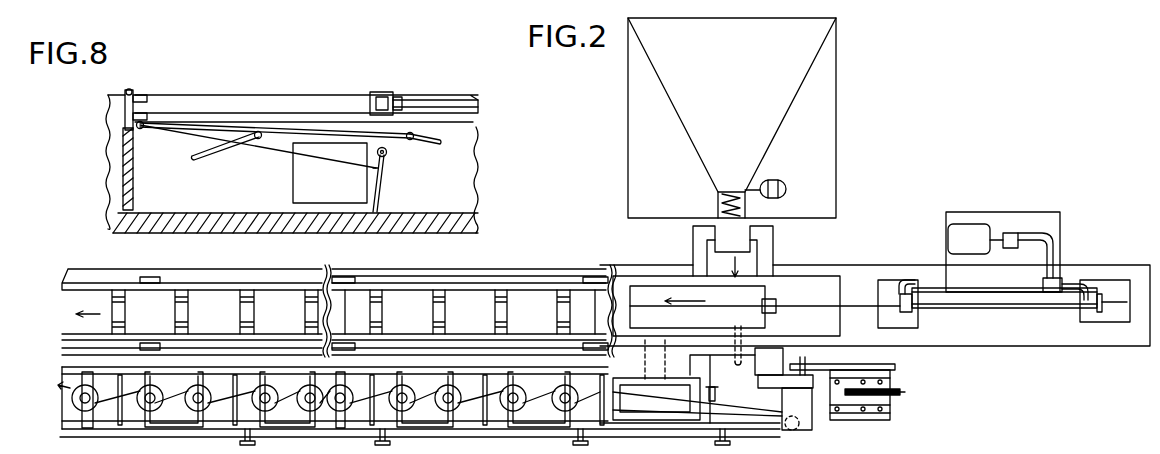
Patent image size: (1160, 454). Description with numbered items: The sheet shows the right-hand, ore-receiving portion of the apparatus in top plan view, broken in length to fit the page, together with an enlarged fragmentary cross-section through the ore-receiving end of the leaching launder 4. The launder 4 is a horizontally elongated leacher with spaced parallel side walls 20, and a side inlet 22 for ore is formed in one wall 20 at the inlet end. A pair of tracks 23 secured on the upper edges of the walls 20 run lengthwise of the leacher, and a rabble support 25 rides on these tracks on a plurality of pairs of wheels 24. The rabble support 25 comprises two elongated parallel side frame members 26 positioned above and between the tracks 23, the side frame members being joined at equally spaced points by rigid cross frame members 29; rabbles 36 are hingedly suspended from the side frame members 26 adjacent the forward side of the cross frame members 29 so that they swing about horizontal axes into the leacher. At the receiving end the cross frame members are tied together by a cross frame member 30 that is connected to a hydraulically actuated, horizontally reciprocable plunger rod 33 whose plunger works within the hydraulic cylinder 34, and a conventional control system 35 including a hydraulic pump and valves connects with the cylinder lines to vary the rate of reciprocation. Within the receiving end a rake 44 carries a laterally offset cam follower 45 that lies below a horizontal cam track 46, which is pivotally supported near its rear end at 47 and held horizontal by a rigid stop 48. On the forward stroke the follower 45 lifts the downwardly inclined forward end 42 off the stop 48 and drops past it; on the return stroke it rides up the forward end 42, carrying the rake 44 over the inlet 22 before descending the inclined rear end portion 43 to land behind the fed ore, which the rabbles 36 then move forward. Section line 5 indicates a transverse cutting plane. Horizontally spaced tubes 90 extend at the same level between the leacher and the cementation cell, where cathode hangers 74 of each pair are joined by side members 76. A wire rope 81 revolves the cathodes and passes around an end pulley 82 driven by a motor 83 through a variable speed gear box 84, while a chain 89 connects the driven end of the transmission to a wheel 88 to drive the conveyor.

In FIG. 8, the leaching launder 4 is at (481, 182).
In FIG. 8, the side walls 20 is at (468, 195).
In FIG. 8, the side inlet 22 is at (299, 176).
In FIG. 2, the side inlet 22 is at (746, 272).
In FIG. 8, the side frame members 26 is at (290, 98).
In FIG. 8, the cross frame member 30 is at (384, 94).
In FIG. 2, the cross frame member 30 is at (770, 296).
In FIG. 8, the plunger rod 33 is at (477, 99).
In FIG. 2, the plunger rod 33 is at (848, 308).
In FIG. 8, the forward end of cam track 42 is at (195, 154).
In FIG. 8, the rear end portion of cam track 43 is at (480, 128).
In FIG. 8, the rake 44 is at (379, 190).
In FIG. 8, the cam follower 45 is at (387, 152).
In FIG. 8, the cam track 46 is at (326, 121).
In FIG. 8, the pivot 47 is at (413, 133).
In FIG. 8, the stop 48 is at (259, 130).
In FIG. 2, the control system 35 is at (1031, 216).
In FIG. 2, the hydraulic cylinder 34 is at (1045, 308).
In FIG. 2, the tracks 23 is at (429, 277).
In FIG. 2, the wheels 24 is at (146, 276).
In FIG. 2, the rabble support 25 is at (534, 280).
In FIG. 2, the cross frame members 29 is at (445, 306).
In FIG. 2, the rabbles 36 is at (239, 312).
In FIG. 2, the section line 5 is at (493, 252).
In FIG. 2, the side members 76 is at (533, 370).
In FIG. 2, the hanger 74 is at (342, 425).
In FIG. 2, the tubes 90 is at (666, 362).
In FIG. 2, the motor 83 is at (776, 352).
In FIG. 2, the chain 89 is at (840, 366).
In FIG. 2, the wire rope 81 is at (760, 412).
In FIG. 2, the pulley 82 is at (800, 430).
In FIG. 2, the variable speed gear box 84 is at (812, 418).
In FIG. 2, the wheels 88 is at (898, 396).